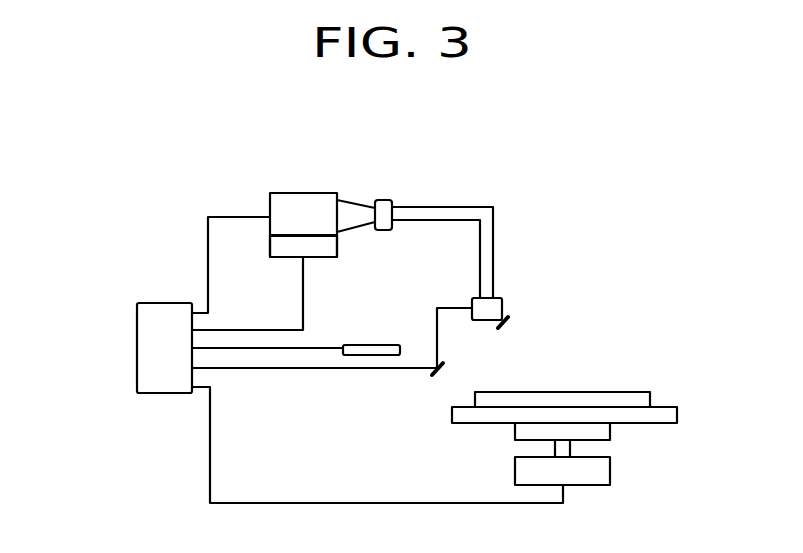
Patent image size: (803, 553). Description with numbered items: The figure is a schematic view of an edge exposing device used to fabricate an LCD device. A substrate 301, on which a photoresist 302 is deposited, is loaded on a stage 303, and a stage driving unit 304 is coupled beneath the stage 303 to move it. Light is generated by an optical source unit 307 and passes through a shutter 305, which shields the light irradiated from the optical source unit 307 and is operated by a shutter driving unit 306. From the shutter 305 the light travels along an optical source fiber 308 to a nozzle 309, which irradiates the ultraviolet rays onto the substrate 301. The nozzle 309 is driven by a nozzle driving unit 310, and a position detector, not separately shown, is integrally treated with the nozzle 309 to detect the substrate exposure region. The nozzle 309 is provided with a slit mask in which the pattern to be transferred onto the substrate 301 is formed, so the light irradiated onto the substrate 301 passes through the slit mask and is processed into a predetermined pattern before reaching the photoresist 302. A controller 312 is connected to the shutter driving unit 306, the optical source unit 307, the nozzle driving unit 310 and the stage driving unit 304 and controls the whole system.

The substrate 301 is at (677, 413).
The photoresist 302 is at (563, 392).
The stage 303 is at (610, 430).
The stage driving unit 304 is at (610, 470).
The shutter 305 is at (383, 200).
The shutter driving unit 306 is at (270, 242).
The optical source unit 307 is at (303, 193).
The optical source fiber 308 is at (446, 207).
The nozzle 309 is at (502, 306).
The nozzle driving unit 310 is at (371, 345).
The controller 312 is at (137, 350).